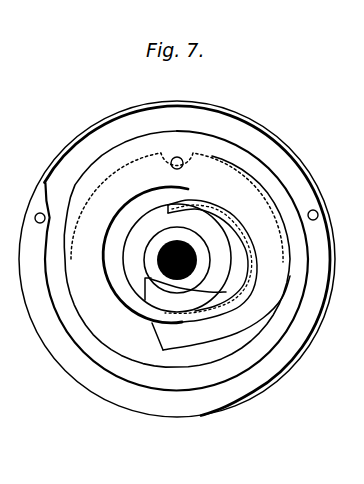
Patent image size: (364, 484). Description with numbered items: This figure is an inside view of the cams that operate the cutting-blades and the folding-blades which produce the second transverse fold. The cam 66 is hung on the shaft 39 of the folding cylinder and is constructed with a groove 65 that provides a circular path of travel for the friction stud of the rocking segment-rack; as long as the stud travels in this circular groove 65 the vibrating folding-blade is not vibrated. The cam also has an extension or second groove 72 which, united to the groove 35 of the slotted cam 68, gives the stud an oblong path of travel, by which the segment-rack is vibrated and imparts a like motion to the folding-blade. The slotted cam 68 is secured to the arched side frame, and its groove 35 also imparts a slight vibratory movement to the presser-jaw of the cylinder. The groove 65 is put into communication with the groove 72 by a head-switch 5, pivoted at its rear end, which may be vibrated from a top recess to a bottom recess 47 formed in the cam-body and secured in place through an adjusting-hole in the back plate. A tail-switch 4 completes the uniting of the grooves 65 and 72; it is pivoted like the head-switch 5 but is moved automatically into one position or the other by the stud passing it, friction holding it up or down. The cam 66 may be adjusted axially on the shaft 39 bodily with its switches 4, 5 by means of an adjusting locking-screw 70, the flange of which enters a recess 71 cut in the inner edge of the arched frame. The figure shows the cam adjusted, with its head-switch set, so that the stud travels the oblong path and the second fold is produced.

The slotted cam 68 is at (177, 259).
The groove 35 is at (176, 261).
The cam 66 is at (177, 249).
The recess 71 is at (177, 207).
The adjusting locking-screw 70 is at (190, 170).
The groove 65 is at (175, 255).
The extension or second groove 72 is at (221, 261).
The tail-switch 4 is at (177, 258).
The shaft 39 is at (177, 260).
The head-switch 5 is at (185, 289).
The bottom recess 47 is at (221, 315).